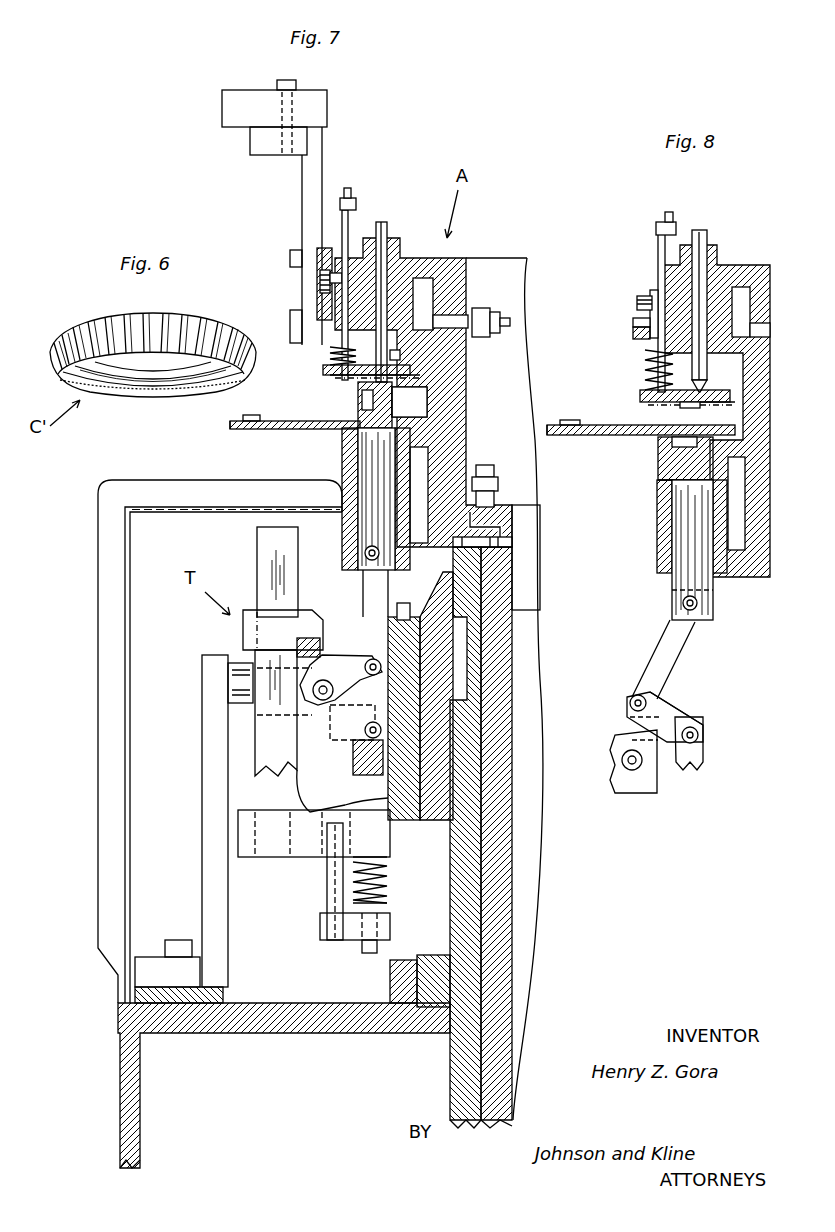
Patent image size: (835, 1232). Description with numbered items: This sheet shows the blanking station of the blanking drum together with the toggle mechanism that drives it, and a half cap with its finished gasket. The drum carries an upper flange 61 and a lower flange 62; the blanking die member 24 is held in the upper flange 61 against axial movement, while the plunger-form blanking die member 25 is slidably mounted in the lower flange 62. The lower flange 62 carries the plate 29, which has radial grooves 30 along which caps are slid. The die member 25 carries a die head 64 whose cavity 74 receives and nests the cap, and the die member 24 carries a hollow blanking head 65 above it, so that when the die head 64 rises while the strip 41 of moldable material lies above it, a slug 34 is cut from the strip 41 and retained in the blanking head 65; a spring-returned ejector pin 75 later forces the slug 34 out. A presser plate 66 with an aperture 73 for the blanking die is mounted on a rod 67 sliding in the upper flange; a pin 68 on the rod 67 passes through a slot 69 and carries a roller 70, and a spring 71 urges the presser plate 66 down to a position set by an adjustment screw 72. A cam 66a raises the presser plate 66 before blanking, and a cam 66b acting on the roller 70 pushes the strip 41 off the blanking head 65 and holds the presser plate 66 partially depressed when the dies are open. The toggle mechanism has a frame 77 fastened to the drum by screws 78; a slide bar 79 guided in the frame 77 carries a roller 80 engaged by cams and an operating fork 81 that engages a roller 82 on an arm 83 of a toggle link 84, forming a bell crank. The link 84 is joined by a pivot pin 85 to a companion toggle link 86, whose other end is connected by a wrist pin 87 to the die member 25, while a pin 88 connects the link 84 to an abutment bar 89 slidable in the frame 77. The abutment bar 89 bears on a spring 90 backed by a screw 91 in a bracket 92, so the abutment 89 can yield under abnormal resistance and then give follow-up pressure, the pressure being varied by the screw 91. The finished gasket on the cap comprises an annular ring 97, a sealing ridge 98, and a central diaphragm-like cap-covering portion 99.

In FIG. 7, the blanking die member 24 is at (392, 358).
In FIG. 7, the blanking die member 25 is at (362, 462).
In FIG. 8, the blanking die member 25 is at (690, 512).
In FIG. 7, the plate 29 is at (242, 430).
In FIG. 8, the plate 29 is at (572, 437).
In FIG. 7, the radial grooves 30 is at (308, 418).
In FIG. 8, the radial grooves 30 is at (597, 423).
In FIG. 8, the slug 34 is at (690, 404).
In FIG. 7, the strip 41 is at (345, 378).
In FIG. 8, the strip 41 is at (655, 401).
In FIG. 7, the upper flange 61 is at (410, 257).
In FIG. 7, the lower flange 62 is at (342, 450).
In FIG. 8, the lower flange 62 is at (658, 493).
In FIG. 7, the die head 64 is at (360, 395).
In FIG. 8, the die head 64 is at (668, 458).
In FIG. 8, the hollow blanking head 65 is at (705, 380).
In FIG. 7, the presser plate 66 is at (330, 370).
In FIG. 8, the presser plate 66 is at (640, 394).
In FIG. 7, the cam 66a is at (318, 300).
In FIG. 8, the cam 66b is at (633, 338).
In FIG. 7, the rod 67 is at (341, 220).
In FIG. 8, the rod 67 is at (656, 247).
In FIG. 8, the pin 68 is at (650, 296).
In FIG. 8, the slot 69 is at (633, 323).
In FIG. 7, the roller 70 is at (320, 278).
In FIG. 8, the roller 70 is at (637, 300).
In FIG. 7, the spring 71 is at (330, 356).
In FIG. 8, the spring 71 is at (645, 362).
In FIG. 7, the adjustment screw 72 is at (349, 197).
In FIG. 8, the adjustment screw 72 is at (669, 222).
In FIG. 8, the aperture 73 is at (707, 403).
In FIG. 7, the cavity 74 is at (398, 393).
In FIG. 8, the cavity 74 is at (660, 440).
In FIG. 7, the ejector pin 75 is at (382, 222).
In FIG. 8, the ejector pin 75 is at (712, 292).
In FIG. 7, the frame 77 is at (272, 856).
In FIG. 7, the screws 78 is at (450, 717).
In FIG. 7, the slide bar 79 is at (257, 557).
In FIG. 7, the roller 80 is at (232, 688).
In FIG. 7, the operating fork 81 is at (312, 650).
In FIG. 8, the operating fork 81 is at (630, 796).
In FIG. 7, the roller 82 is at (322, 702).
In FIG. 8, the roller 82 is at (650, 785).
In FIG. 7, the arm 83 is at (320, 660).
In FIG. 8, the arm 83 is at (630, 720).
In FIG. 7, the toggle link 84 is at (357, 718).
In FIG. 8, the toggle link 84 is at (675, 706).
In FIG. 7, the pivot pin 85 is at (373, 659).
In FIG. 8, the pivot pin 85 is at (631, 700).
In FIG. 7, the toggle link 86 is at (384, 585).
In FIG. 8, the toggle link 86 is at (670, 640).
In FIG. 7, the wrist pin 87 is at (365, 553).
In FIG. 8, the wrist pin 87 is at (683, 603).
In FIG. 7, the pin 88 is at (365, 735).
In FIG. 8, the pin 88 is at (698, 731).
In FIG. 7, the abutment bar 89 is at (358, 775).
In FIG. 8, the abutment bar 89 is at (703, 760).
In FIG. 7, the spring 90 is at (355, 878).
In FIG. 7, the screw 91 is at (360, 945).
In FIG. 7, the bracket 92 is at (320, 913).
In FIG. 6, the annular ring 97 is at (226, 382).
In FIG. 6, the sealing ridge 98 is at (200, 383).
In FIG. 6, the cap-covering portion 99 is at (153, 392).